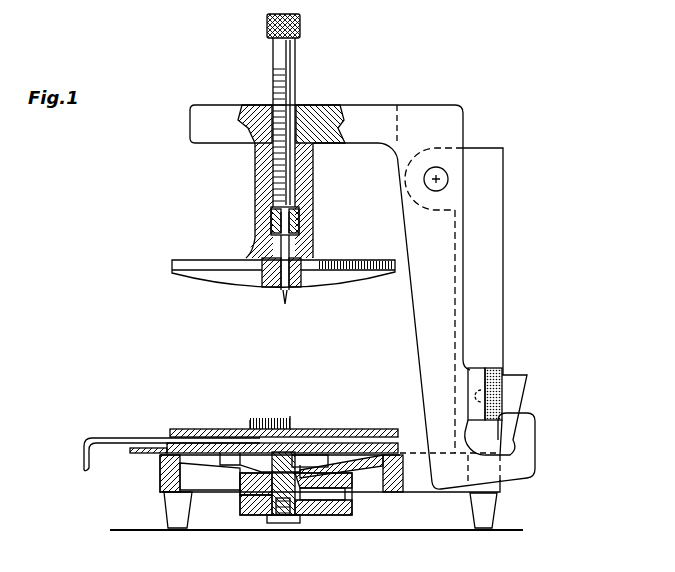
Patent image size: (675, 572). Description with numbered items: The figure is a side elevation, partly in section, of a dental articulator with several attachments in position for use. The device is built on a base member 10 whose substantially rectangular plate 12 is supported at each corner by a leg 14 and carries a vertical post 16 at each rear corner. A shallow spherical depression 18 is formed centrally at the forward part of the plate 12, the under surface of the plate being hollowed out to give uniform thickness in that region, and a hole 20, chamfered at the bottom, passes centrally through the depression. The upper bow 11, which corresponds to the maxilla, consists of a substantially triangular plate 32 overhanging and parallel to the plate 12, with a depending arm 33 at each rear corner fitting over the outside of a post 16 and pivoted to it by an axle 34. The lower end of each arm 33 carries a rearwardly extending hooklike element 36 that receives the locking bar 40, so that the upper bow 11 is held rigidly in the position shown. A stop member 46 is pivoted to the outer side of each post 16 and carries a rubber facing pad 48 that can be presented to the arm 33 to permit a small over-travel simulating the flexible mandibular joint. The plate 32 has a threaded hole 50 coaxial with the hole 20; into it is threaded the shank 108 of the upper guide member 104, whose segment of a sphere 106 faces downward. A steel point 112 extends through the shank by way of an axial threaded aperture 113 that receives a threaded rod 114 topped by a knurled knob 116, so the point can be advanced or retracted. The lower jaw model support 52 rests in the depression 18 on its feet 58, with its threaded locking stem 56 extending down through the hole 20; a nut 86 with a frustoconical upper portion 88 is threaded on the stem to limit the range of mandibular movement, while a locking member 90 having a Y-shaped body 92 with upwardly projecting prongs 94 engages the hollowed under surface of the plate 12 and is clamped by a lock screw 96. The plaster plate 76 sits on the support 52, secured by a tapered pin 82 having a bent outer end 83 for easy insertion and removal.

The base member 10 is at (152, 483).
The upper bow 11 is at (184, 117).
The rectangular plate 12 is at (160, 456).
The leg 14 is at (168, 513).
The vertical post 16 is at (493, 290).
The spherical depression 18 is at (365, 458).
The hole 20 is at (262, 462).
The triangular plate 32 is at (366, 116).
The depending arm 33 is at (428, 318).
The axle 34 is at (440, 179).
The hooklike element 36 is at (523, 457).
The locking bar 40 is at (513, 400).
The stop member 46 is at (474, 370).
The rubber facing pad 48 is at (500, 370).
The threaded hole 50 is at (306, 122).
The lower jaw model support 52 is at (214, 420).
The threaded locking stem 56 is at (343, 503).
The feet 58 is at (198, 437).
The plaster plate 76 is at (263, 415).
The tapered pin 82 is at (130, 437).
The bent outer end 83 is at (82, 450).
The nut 86 is at (352, 514).
The frustoconical upper portion 88 is at (308, 453).
The locking member 90 is at (335, 517).
The Y-shaped body 92 is at (310, 515).
The prong 94 is at (230, 488).
The lock screw 96 is at (285, 522).
The upper guide member 104 is at (246, 178).
The segment of a sphere 106 is at (340, 282).
The stem or shank 108 is at (315, 204).
The steel point 112 is at (283, 222).
The axial threaded aperture 113 is at (272, 233).
The threaded rod 114 is at (276, 60).
The knurled knob 116 is at (266, 24).